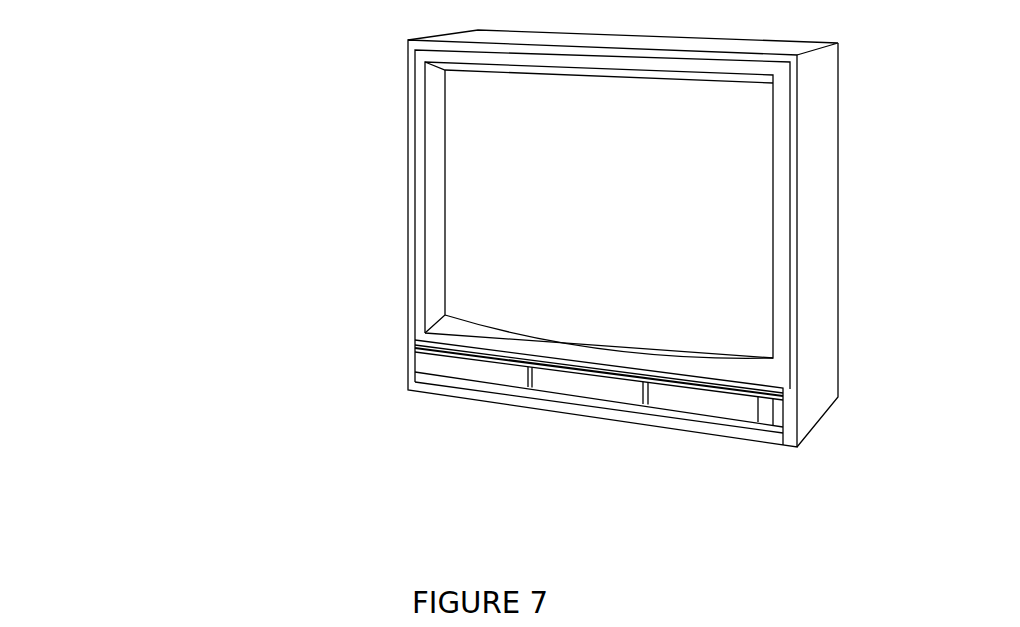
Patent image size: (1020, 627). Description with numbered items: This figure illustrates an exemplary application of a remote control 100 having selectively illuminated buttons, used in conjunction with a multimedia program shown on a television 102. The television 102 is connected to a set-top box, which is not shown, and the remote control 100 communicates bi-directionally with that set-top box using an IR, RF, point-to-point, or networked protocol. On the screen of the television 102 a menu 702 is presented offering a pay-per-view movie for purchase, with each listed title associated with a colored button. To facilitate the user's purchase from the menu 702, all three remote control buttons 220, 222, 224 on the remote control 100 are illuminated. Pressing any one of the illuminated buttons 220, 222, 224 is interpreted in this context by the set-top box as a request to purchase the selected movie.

The remote control 100 is at (174, 287).
The television 102 is at (843, 353).
The menu 702 is at (470, 165).
The remote control button 220 is at (103, 451).
The remote control button 222 is at (123, 377).
The remote control button 224 is at (123, 399).